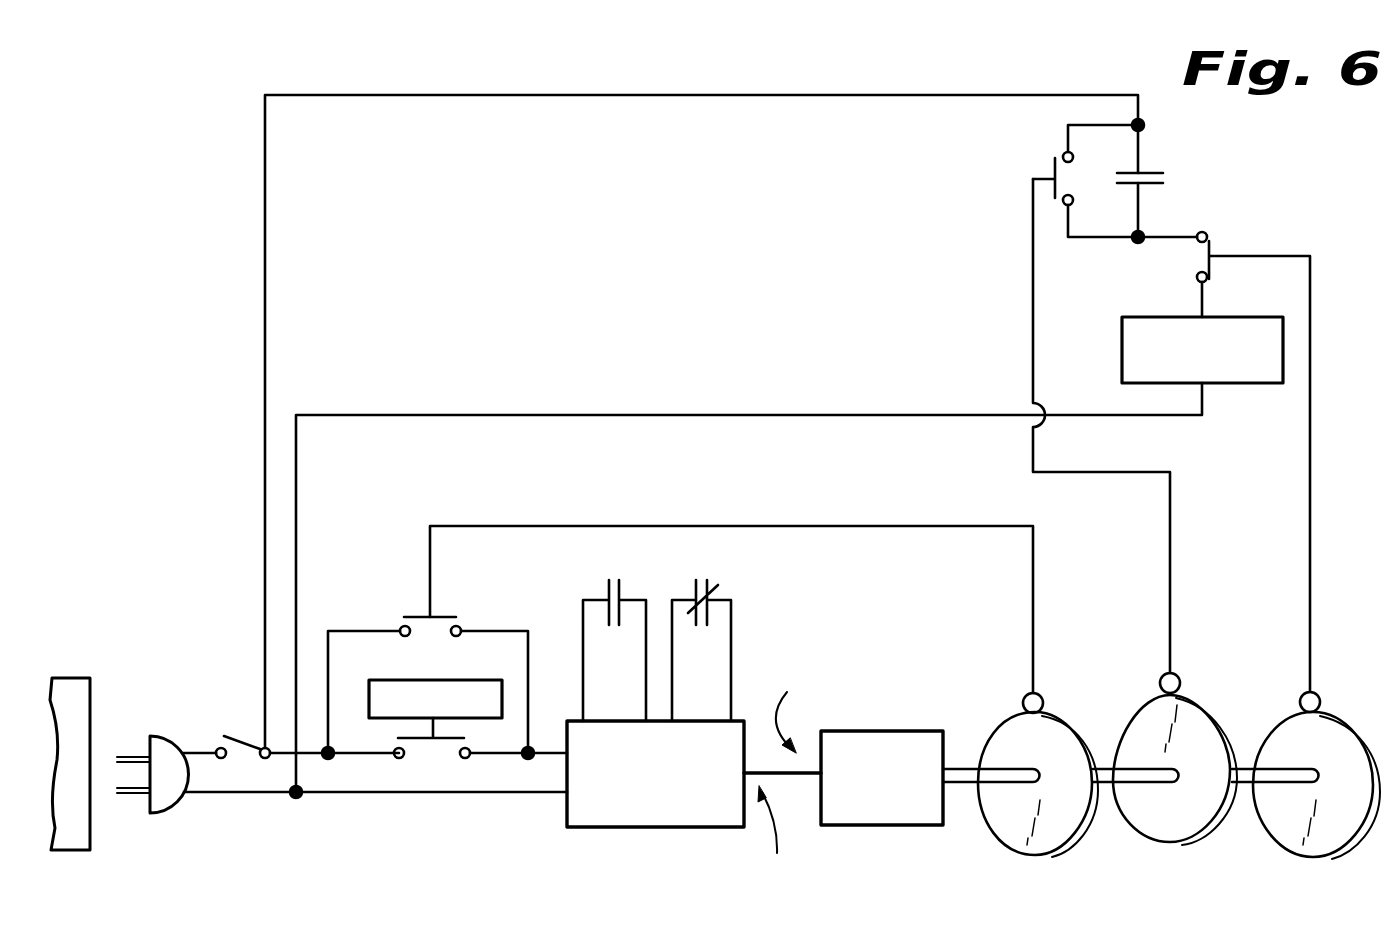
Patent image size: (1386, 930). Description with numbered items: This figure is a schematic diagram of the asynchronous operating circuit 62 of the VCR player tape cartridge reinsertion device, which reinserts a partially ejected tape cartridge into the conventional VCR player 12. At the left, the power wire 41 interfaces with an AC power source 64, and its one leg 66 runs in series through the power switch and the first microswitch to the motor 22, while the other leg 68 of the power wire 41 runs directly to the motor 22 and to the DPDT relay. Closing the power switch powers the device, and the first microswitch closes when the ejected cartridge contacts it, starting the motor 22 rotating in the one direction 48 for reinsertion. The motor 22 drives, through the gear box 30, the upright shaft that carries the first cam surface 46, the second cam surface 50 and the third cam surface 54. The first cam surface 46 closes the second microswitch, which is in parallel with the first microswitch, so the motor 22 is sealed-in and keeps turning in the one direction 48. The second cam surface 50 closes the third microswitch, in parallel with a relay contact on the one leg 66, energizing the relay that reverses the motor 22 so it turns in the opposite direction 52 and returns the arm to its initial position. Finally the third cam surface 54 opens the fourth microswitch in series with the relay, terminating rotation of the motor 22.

The asynchronous operating circuit 62 is at (152, 301).
The AC power source 64 is at (72, 690).
The power wire 41 is at (190, 751).
The one leg 66 is at (212, 745).
The other leg 68 is at (233, 796).
The conventional VCR player 12 is at (378, 683).
The motor 22 is at (587, 816).
The one direction 48 is at (787, 706).
The opposite direction 52 is at (775, 840).
The gear box 30 is at (918, 818).
The first cam surface 46 is at (1048, 855).
The second cam surface 50 is at (1142, 708).
The third cam surface 54 is at (1297, 857).